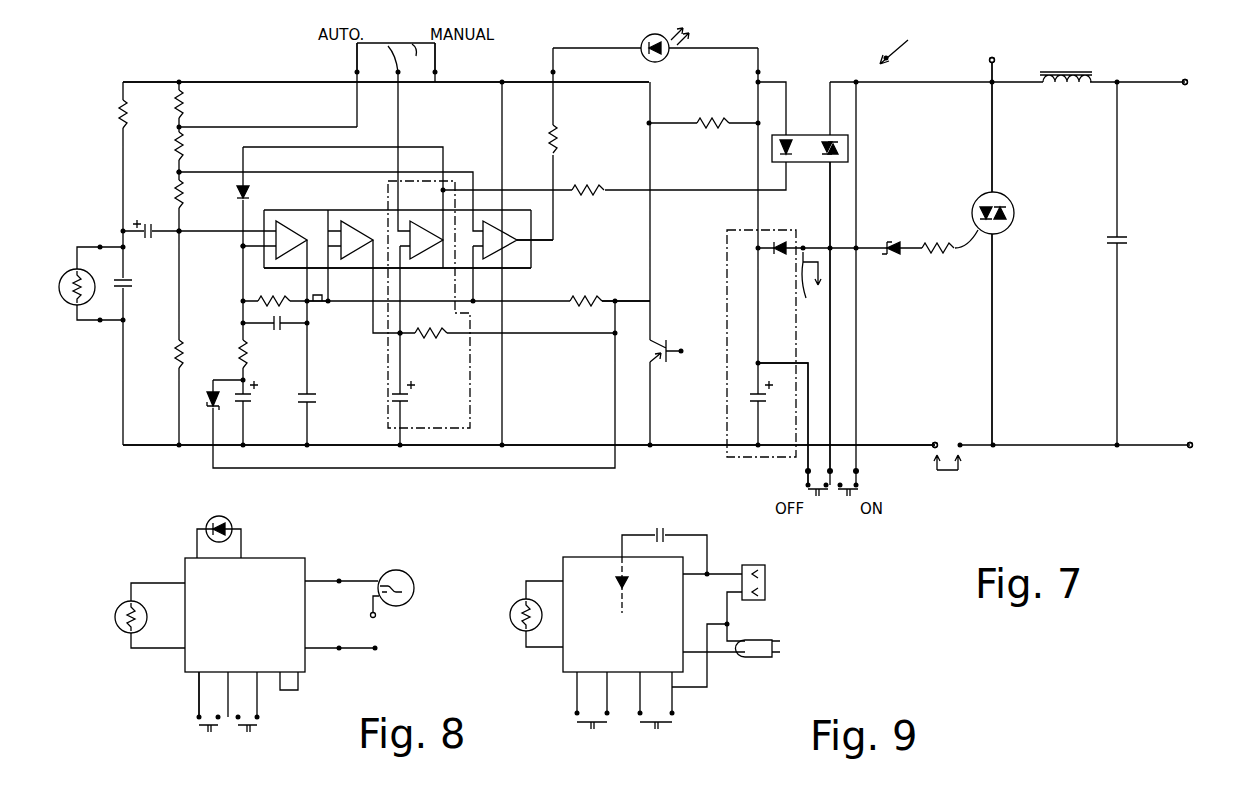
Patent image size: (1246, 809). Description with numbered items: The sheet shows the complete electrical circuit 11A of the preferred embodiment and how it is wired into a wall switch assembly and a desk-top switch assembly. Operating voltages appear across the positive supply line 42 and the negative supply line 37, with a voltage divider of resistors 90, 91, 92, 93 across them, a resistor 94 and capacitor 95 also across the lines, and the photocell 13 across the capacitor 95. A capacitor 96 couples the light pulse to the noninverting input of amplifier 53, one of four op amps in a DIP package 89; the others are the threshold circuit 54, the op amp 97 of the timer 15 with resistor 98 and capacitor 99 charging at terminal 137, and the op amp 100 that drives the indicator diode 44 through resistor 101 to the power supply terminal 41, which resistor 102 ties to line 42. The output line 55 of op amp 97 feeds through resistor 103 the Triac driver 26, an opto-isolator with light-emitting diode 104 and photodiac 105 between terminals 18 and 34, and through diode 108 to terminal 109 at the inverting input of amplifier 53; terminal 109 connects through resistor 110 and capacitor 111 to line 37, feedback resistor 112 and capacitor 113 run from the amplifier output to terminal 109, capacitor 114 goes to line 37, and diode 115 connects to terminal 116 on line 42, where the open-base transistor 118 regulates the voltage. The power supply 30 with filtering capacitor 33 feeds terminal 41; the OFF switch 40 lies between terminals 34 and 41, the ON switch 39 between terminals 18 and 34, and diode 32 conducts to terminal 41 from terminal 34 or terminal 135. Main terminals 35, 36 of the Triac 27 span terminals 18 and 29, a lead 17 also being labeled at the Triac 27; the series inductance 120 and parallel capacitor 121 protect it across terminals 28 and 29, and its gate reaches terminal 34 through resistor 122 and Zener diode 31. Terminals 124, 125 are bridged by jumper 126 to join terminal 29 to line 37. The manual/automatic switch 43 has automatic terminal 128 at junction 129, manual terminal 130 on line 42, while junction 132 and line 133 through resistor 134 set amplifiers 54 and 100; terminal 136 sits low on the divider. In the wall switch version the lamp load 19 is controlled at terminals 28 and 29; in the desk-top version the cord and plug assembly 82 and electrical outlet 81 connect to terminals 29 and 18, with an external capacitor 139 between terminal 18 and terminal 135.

In FIG. 7, the circuit 11A is at (945, 51).
In FIG. 8, the circuit 11A is at (280, 562).
In FIG. 9, the circuit 11A is at (585, 572).
In FIG. 7, the photocell 13 is at (70, 303).
In FIG. 8, the photocell 13 is at (124, 632).
In FIG. 9, the photocell 13 is at (520, 630).
In FIG. 7, the timer 15 is at (470, 395).
In FIG. 7, the load terminal conductor 17 is at (975, 205).
In FIG. 7, the terminal 18 is at (995, 60).
In FIG. 9, the terminal 18 is at (712, 564).
In FIG. 8, the lamp load 19 is at (410, 575).
In FIG. 7, the Triac driver 26 is at (840, 135).
In FIG. 7, the Triac 27 is at (1016, 213).
In FIG. 7, the terminal 28 is at (1186, 78).
In FIG. 8, the terminal 28 is at (310, 583).
In FIG. 7, the terminal 29 is at (1190, 448).
In FIG. 8, the terminal 29 is at (310, 650).
In FIG. 9, the terminal 29 is at (718, 655).
In FIG. 7, the power supply 30 is at (727, 380).
In FIG. 7, the Zener diode 31 is at (893, 256).
In FIG. 7, the diode 32 is at (779, 236).
In FIG. 9, the diode 32 is at (630, 583).
In FIG. 7, the capacitor 33 is at (761, 404).
In FIG. 7, the terminal 34 is at (832, 252).
In FIG. 7, the main terminal 35 is at (1006, 200).
In FIG. 7, the main terminal 36 is at (1006, 232).
In FIG. 7, the negative supply line 37 is at (690, 448).
In FIG. 7, the ON switch 39 is at (849, 497).
In FIG. 8, the ON switch 39 is at (250, 732).
In FIG. 9, the ON switch 39 is at (590, 730).
In FIG. 7, the OFF switch 40 is at (818, 497).
In FIG. 8, the OFF switch 40 is at (206, 732).
In FIG. 9, the OFF switch 40 is at (656, 730).
In FIG. 7, the power supply terminal 41 is at (759, 362).
In FIG. 8, the power supply terminal 41 is at (198, 675).
In FIG. 7, the positive supply line 42 is at (466, 82).
In FIG. 7, the manual/automatic switch 43 is at (392, 46).
In FIG. 7, the indicator diode 44 is at (641, 44).
In FIG. 8, the indicator diode 44 is at (219, 529).
In FIG. 7, the amplifier 53 is at (292, 222).
In FIG. 7, the threshold circuit 54 is at (360, 222).
In FIG. 7, the line 55 is at (537, 186).
In FIG. 9, the electrical outlet 81 is at (758, 566).
In FIG. 9, the cord and plug assembly 82 is at (760, 640).
In FIG. 7, the DIP package 89 is at (505, 268).
In FIG. 7, the resistor 90 is at (184, 102).
In FIG. 7, the resistor 91 is at (184, 140).
In FIG. 7, the resistor 92 is at (176, 195).
In FIG. 7, the resistor 93 is at (178, 360).
In FIG. 7, the resistor 94 is at (120, 133).
In FIG. 7, the capacitor 95 is at (128, 288).
In FIG. 7, the capacitor 96 is at (153, 233).
In FIG. 7, the op amp 97 is at (432, 222).
In FIG. 7, the resistor 98 is at (415, 340).
In FIG. 7, the capacitor 99 is at (406, 402).
In FIG. 7, the op amp 100 is at (522, 250).
In FIG. 7, the resistor 101 is at (560, 140).
In FIG. 7, the resistor 102 is at (698, 126).
In FIG. 7, the resistor 103 is at (588, 188).
In FIG. 7, the light-emitting diode 104 is at (778, 150).
In FIG. 7, the photodiac 105 is at (840, 154).
In FIG. 7, the diode 108 is at (236, 190).
In FIG. 7, the terminal 109 is at (242, 248).
In FIG. 7, the resistor 110 is at (250, 358).
In FIG. 7, the capacitor 111 is at (248, 403).
In FIG. 7, the feedback resistor 112 is at (286, 295).
In FIG. 7, the capacitor 113 is at (276, 328).
In FIG. 7, the capacitor 114 is at (310, 392).
In FIG. 7, the diode 115 is at (208, 392).
In FIG. 7, the terminal 116 is at (652, 300).
In FIG. 7, the transistor 118 is at (661, 338).
In FIG. 7, the series inductance 120 is at (1088, 80).
In FIG. 7, the parallel capacitor 121 is at (1122, 238).
In FIG. 7, the resistor 122 is at (940, 254).
In FIG. 7, the terminal 124 is at (932, 449).
In FIG. 9, the terminal 124 is at (674, 690).
In FIG. 7, the terminal 125 is at (963, 449).
In FIG. 7, the jumper 126 is at (947, 473).
In FIG. 8, the jumper 126 is at (297, 692).
In FIG. 7, the automatic terminal 128 is at (376, 62).
In FIG. 7, the junction 129 is at (177, 129).
In FIG. 7, the manual terminal 130 is at (423, 62).
In FIG. 7, the junction 132 is at (181, 171).
In FIG. 7, the line 133 is at (340, 304).
In FIG. 7, the resistor 134 is at (585, 298).
In FIG. 7, the terminal 135 is at (818, 288).
In FIG. 9, the terminal 135 is at (624, 545).
In FIG. 7, the terminal 136 is at (181, 232).
In FIG. 7, the terminal 137 is at (402, 332).
In FIG. 9, the external capacitor 139 is at (665, 533).